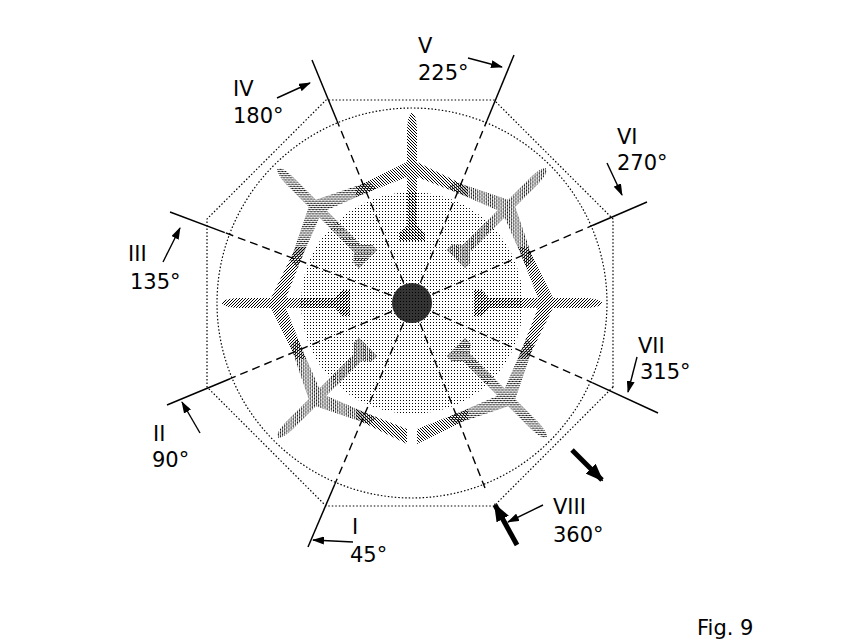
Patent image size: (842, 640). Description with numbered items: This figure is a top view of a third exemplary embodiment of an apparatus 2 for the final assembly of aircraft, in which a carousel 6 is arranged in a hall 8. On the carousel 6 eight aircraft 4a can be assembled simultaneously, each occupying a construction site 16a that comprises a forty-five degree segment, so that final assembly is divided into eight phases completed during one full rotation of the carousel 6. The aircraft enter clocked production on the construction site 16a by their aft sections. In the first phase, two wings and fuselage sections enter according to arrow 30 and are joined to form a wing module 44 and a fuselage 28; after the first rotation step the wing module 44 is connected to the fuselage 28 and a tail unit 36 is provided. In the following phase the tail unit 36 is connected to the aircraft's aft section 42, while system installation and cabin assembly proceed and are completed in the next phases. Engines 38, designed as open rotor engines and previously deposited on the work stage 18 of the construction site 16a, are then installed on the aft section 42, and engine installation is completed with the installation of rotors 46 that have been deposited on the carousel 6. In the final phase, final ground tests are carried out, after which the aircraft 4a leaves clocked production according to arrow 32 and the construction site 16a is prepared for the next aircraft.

The apparatus 2 is at (86, 81).
The aircraft 4a is at (548, 408).
The carousel 6 is at (605, 242).
The hall 8 is at (213, 197).
The construction site 16a is at (427, 475).
The work stage 18 is at (311, 235).
The fuselage 28 is at (295, 417).
The arrow 30 is at (513, 535).
The arrow 32 is at (577, 452).
The tail unit 36 is at (381, 338).
The engines 38 is at (445, 260).
The aft section 42 is at (325, 303).
The wing module 44 is at (400, 437).
The rotors 46 is at (487, 290).